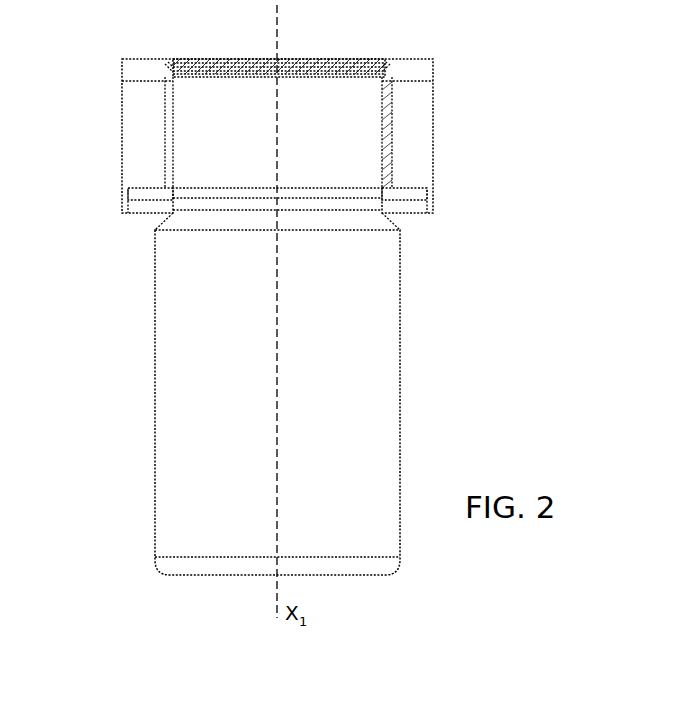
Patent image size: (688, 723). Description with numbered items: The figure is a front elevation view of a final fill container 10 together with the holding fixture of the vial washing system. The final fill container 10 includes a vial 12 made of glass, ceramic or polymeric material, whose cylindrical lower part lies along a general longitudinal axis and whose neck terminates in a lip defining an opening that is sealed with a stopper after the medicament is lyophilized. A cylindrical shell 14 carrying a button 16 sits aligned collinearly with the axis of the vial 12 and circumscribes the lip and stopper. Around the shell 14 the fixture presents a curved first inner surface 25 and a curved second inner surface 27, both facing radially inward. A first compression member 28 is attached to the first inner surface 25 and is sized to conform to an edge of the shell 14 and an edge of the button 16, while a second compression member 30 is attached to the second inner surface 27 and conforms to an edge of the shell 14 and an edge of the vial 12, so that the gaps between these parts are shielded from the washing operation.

The final fill container 10 is at (546, 116).
The vial 12 is at (232, 398).
The cylindrical shell 14 is at (240, 149).
The button 16 is at (308, 59).
The first inner surface 25 is at (136, 73).
The second inner surface 27 is at (142, 203).
The first compression member 28 is at (171, 72).
The second compression member 30 is at (168, 200).